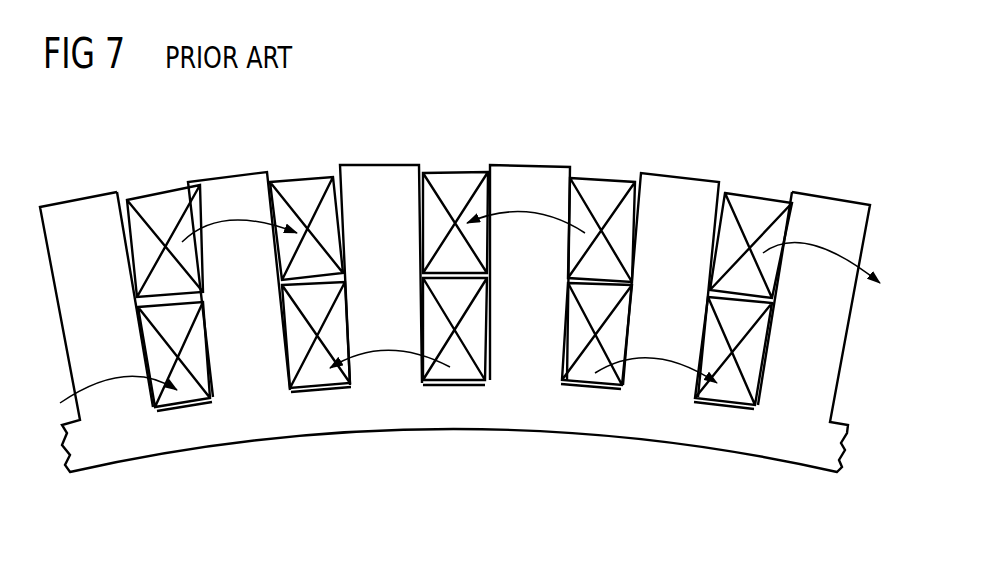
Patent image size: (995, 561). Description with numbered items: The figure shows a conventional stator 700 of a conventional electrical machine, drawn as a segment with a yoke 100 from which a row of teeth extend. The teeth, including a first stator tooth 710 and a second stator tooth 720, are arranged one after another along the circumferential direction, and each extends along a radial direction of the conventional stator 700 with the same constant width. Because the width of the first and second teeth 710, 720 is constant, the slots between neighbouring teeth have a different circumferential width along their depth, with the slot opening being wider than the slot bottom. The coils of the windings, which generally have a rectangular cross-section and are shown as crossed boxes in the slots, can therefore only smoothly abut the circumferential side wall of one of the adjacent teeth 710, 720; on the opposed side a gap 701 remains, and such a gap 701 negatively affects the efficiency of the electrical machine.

The conventional stator 700 is at (760, 116).
The stator yoke 100 is at (721, 441).
The first stator tooth 710 is at (233, 187).
The second stator tooth 720 is at (380, 178).
The gap 701 is at (118, 219).